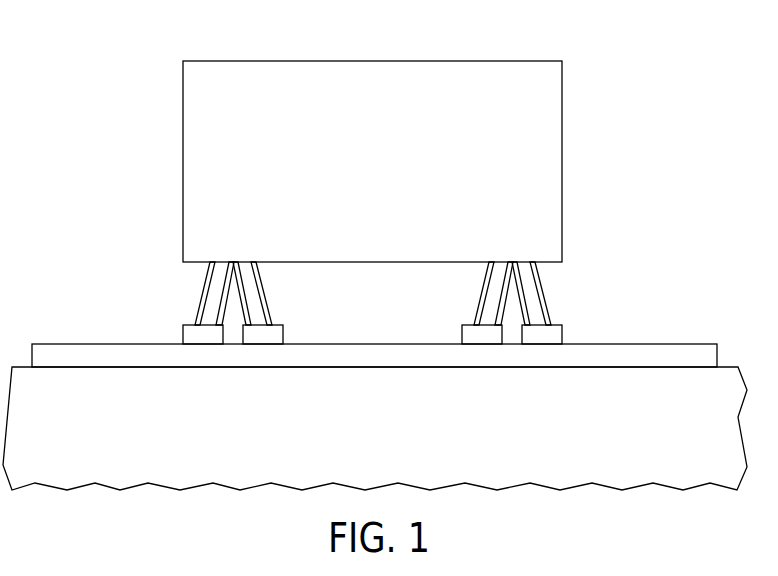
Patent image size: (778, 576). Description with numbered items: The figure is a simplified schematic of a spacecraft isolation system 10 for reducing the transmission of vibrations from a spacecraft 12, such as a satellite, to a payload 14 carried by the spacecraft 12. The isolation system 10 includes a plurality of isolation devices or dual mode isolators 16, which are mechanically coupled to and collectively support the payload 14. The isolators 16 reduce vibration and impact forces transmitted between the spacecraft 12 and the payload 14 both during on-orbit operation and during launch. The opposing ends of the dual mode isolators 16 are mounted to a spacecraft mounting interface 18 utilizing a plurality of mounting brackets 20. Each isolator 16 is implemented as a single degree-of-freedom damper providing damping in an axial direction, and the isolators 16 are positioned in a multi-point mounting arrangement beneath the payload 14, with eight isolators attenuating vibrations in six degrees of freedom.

The spacecraft isolation system 10 is at (92, 237).
The spacecraft 12 is at (231, 475).
The payload 14 is at (371, 72).
The dual mode isolators 16 is at (375, 293).
The spacecraft mounting interface 18 is at (53, 353).
The mounting brackets 20 is at (374, 362).